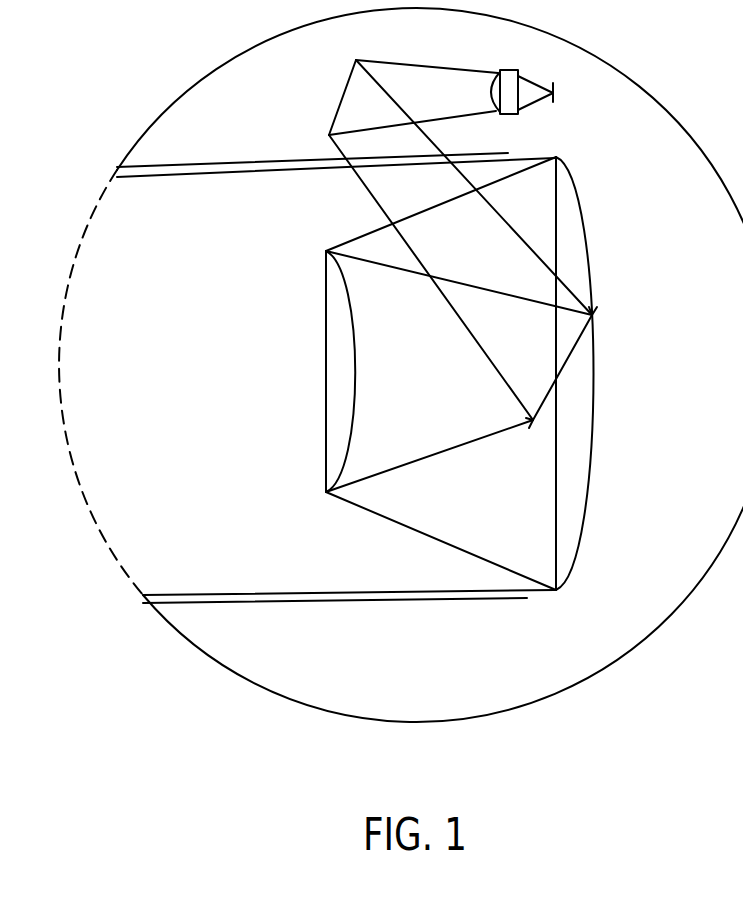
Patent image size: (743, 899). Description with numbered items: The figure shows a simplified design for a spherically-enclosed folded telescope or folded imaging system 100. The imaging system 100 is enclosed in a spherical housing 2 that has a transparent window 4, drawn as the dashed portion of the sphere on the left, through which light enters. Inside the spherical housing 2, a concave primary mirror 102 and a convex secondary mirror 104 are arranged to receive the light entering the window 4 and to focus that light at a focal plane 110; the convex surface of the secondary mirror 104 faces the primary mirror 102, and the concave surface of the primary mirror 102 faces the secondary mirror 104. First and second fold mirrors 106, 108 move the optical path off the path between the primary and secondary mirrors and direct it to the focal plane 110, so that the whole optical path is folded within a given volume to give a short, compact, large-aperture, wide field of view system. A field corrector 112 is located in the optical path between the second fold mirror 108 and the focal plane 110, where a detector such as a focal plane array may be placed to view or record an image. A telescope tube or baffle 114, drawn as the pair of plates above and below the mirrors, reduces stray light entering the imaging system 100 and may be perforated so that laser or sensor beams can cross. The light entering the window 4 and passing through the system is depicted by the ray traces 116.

The spherical housing 2 is at (222, 68).
The transparent window 4 is at (80, 248).
The folded imaging system 100 is at (621, 779).
The concave primary mirror 102 is at (583, 227).
The convex secondary mirror 104 is at (325, 328).
The first fold mirror 106 is at (576, 343).
The second fold mirror 108 is at (339, 105).
The focal plane 110 is at (553, 93).
The field corrector 112 is at (500, 70).
The baffle 114 is at (240, 163).
The ray traces 116 is at (213, 173).